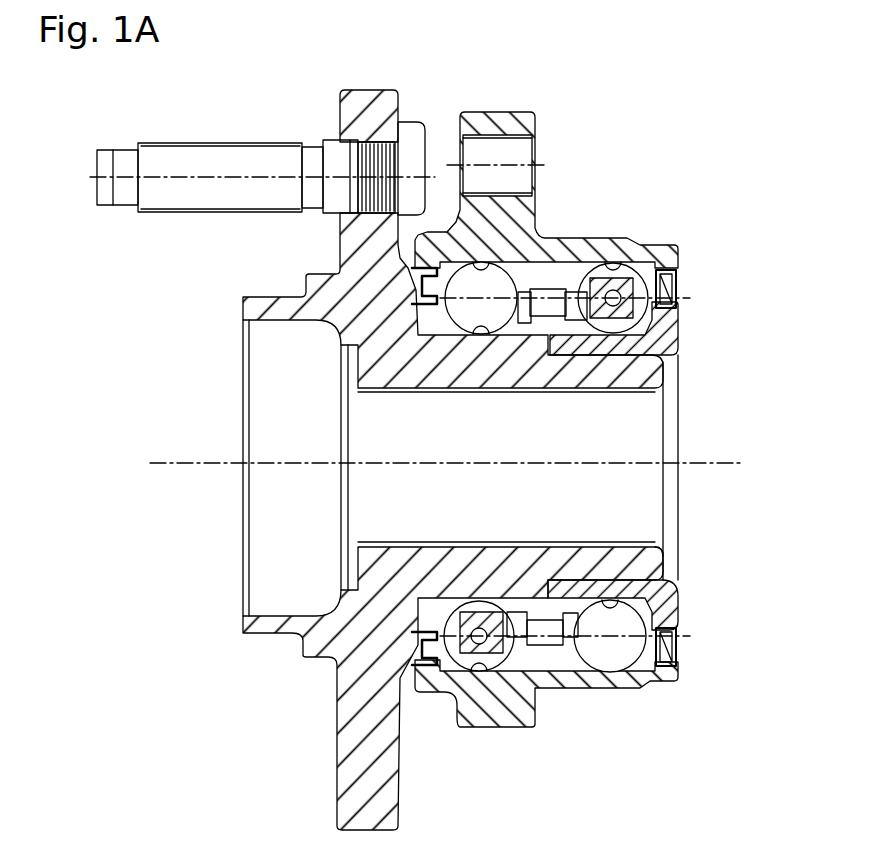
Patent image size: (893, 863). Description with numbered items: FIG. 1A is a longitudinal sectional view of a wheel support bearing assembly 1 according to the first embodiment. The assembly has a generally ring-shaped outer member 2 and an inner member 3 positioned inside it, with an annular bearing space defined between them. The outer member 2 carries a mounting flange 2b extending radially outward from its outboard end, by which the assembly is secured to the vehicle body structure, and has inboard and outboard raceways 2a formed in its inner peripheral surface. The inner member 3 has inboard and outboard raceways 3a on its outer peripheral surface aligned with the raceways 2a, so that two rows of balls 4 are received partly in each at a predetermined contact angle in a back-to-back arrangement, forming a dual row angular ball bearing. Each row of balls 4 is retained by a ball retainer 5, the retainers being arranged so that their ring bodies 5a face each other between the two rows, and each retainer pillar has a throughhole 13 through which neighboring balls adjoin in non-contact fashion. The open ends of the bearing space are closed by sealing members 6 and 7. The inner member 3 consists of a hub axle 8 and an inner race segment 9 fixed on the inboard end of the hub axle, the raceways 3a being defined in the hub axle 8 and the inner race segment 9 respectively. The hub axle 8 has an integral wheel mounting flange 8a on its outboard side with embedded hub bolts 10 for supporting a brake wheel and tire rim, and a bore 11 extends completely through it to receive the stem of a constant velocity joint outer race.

The wheel support bearing assembly 1 is at (210, 369).
The outer member 2 is at (587, 240).
The raceways 2a is at (476, 258).
The mounting flange 2b is at (500, 118).
The inner member 3 is at (126, 494).
The raceways 3a is at (470, 345).
The balls 4 is at (455, 325).
The ball retainers 5 is at (537, 260).
The ring body 5a is at (518, 612).
The sealing member 6 is at (417, 647).
The sealing member 7 is at (678, 653).
The hub axle 8 is at (387, 355).
The wheel mounting flange 8a is at (357, 113).
The inner race segment 9 is at (362, 524).
The hub bolts 10 is at (187, 163).
The bore 11 is at (590, 538).
The throughhole 13 is at (662, 301).